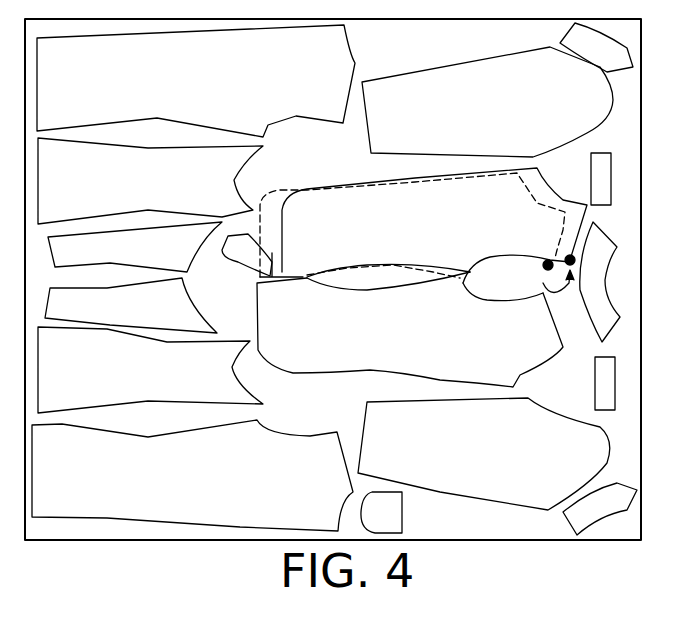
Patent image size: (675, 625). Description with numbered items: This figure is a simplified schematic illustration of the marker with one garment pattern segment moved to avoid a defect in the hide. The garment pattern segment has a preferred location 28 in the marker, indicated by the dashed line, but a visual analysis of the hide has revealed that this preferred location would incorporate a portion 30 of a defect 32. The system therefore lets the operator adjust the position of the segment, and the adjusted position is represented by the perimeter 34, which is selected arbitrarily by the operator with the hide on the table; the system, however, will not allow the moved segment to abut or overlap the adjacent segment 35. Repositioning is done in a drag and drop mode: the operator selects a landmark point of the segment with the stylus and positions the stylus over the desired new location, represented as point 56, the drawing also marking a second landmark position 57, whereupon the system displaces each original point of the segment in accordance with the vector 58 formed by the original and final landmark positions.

The preferred location 28 is at (276, 195).
The portion of defect 30 is at (263, 253).
The defect 32 is at (238, 268).
The perimeter 34 is at (337, 252).
The segment 35 is at (333, 352).
The point 56 is at (543, 266).
The second reference point 57 is at (567, 256).
The vector 58 is at (548, 302).